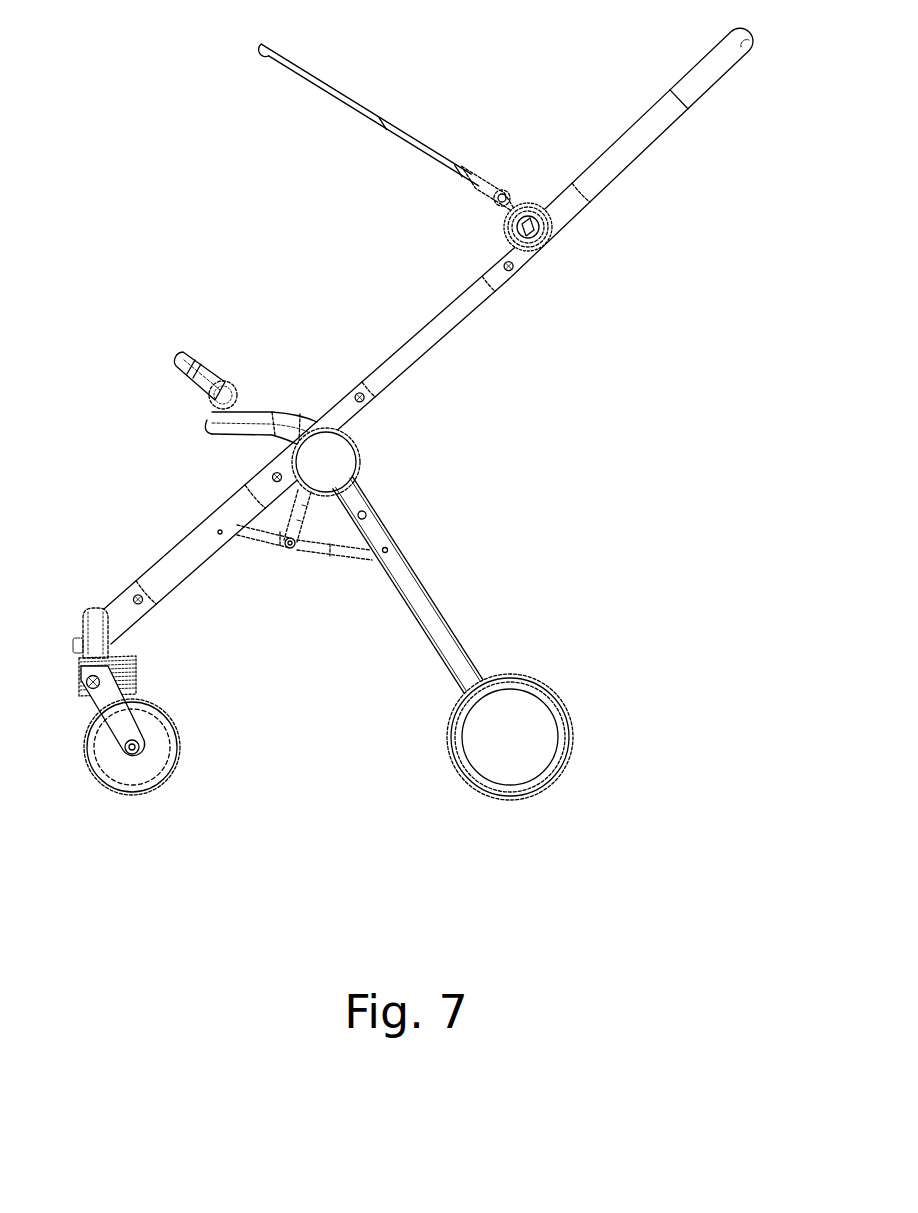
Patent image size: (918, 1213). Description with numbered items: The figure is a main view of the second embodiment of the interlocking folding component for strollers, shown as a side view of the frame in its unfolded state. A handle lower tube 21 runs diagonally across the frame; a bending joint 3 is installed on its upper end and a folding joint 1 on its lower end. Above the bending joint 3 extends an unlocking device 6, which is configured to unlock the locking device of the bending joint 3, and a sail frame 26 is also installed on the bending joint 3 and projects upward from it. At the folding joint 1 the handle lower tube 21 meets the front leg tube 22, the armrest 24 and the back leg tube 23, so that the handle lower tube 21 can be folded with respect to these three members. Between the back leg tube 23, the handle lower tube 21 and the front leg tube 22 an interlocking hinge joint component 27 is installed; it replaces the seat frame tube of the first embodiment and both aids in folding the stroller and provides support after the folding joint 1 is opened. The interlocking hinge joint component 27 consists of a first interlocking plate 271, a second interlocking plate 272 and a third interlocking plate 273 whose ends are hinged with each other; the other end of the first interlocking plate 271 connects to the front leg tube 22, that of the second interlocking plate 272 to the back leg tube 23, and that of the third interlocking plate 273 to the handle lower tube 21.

The folding joint 1 is at (348, 457).
The bending joint 3 is at (551, 241).
The unlocking device 6 is at (637, 158).
The handle lower tube 21 is at (443, 339).
The front leg tube 22 is at (176, 546).
The back leg tube 23 is at (420, 580).
The armrest 24 is at (248, 413).
The sail frame 26 is at (437, 153).
The interlocking hinge joint component 27 is at (362, 634).
The first interlocking plate 271 is at (247, 540).
The second interlocking plate 272 is at (323, 550).
The third interlocking plate 273 is at (290, 548).